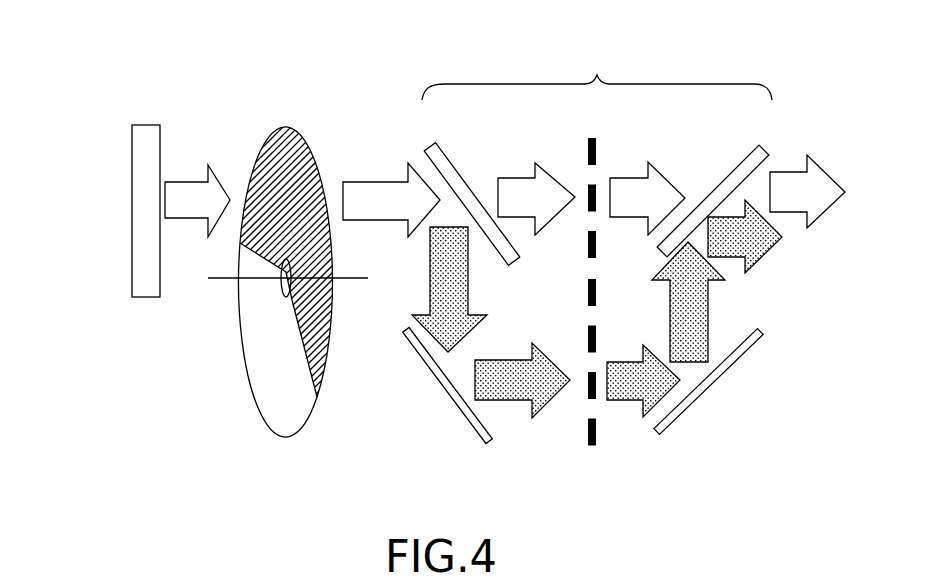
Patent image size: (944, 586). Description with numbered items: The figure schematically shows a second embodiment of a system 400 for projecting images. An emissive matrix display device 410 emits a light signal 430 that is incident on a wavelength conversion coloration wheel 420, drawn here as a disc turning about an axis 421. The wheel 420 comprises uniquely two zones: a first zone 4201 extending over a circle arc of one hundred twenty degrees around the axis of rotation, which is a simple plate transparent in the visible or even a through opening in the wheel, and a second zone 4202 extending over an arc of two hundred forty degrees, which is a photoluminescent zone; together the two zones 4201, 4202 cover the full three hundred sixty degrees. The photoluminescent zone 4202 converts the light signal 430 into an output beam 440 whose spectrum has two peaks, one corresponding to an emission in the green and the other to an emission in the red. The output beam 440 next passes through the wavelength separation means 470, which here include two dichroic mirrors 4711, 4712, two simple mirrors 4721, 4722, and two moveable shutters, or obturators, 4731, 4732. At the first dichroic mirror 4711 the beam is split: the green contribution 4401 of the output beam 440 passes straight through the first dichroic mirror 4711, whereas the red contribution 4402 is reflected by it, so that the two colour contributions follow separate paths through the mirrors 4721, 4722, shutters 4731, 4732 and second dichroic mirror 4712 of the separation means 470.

The system for projecting images 400 is at (422, 252).
The emissive matrix display device 410 is at (140, 147).
The light signal 430 is at (187, 207).
The wavelength conversion coloration wheel 420 is at (311, 257).
The first zone 4201 is at (265, 371).
The second zone 4202 is at (260, 170).
The rotation axis 421 is at (368, 278).
The output beam 440 is at (370, 195).
The wavelength separation means 470 is at (602, 270).
The first dichroic mirror 4711 is at (447, 165).
The second dichroic mirror 4712 is at (715, 190).
The first simple mirror 4721 is at (458, 414).
The second simple mirror 4722 is at (700, 395).
The first moveable shutter 4731 is at (589, 143).
The second moveable shutter 4732 is at (592, 388).
The green contribution 4401 is at (553, 215).
The red contribution 4402 is at (432, 281).